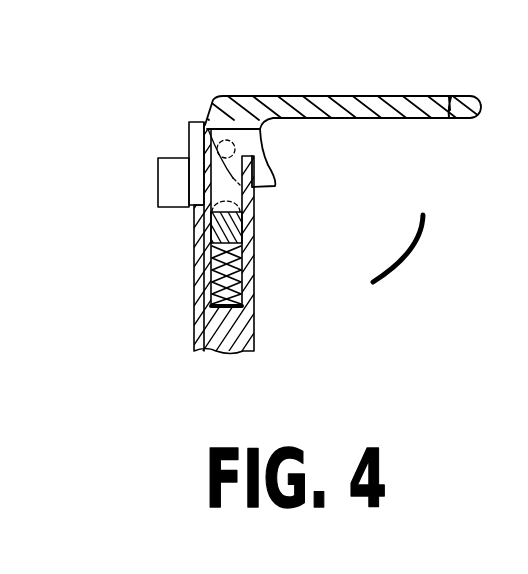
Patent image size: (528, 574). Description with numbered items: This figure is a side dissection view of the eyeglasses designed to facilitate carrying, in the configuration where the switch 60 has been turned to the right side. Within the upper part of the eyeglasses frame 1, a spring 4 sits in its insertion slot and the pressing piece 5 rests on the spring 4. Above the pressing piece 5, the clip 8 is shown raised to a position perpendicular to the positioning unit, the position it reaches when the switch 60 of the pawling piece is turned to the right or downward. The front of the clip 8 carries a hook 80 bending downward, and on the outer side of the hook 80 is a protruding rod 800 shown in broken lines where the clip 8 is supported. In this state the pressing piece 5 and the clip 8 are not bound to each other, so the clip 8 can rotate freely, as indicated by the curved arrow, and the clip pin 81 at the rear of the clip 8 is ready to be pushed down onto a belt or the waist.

The eyeglasses frame 1 is at (199, 293).
The spring 4 is at (254, 296).
The pressing piece 5 is at (254, 232).
The clip 8 is at (344, 95).
The switch 60 is at (170, 180).
The hook 80 is at (268, 150).
The clip pin 81 is at (449, 119).
The protruding rod 800 is at (231, 136).